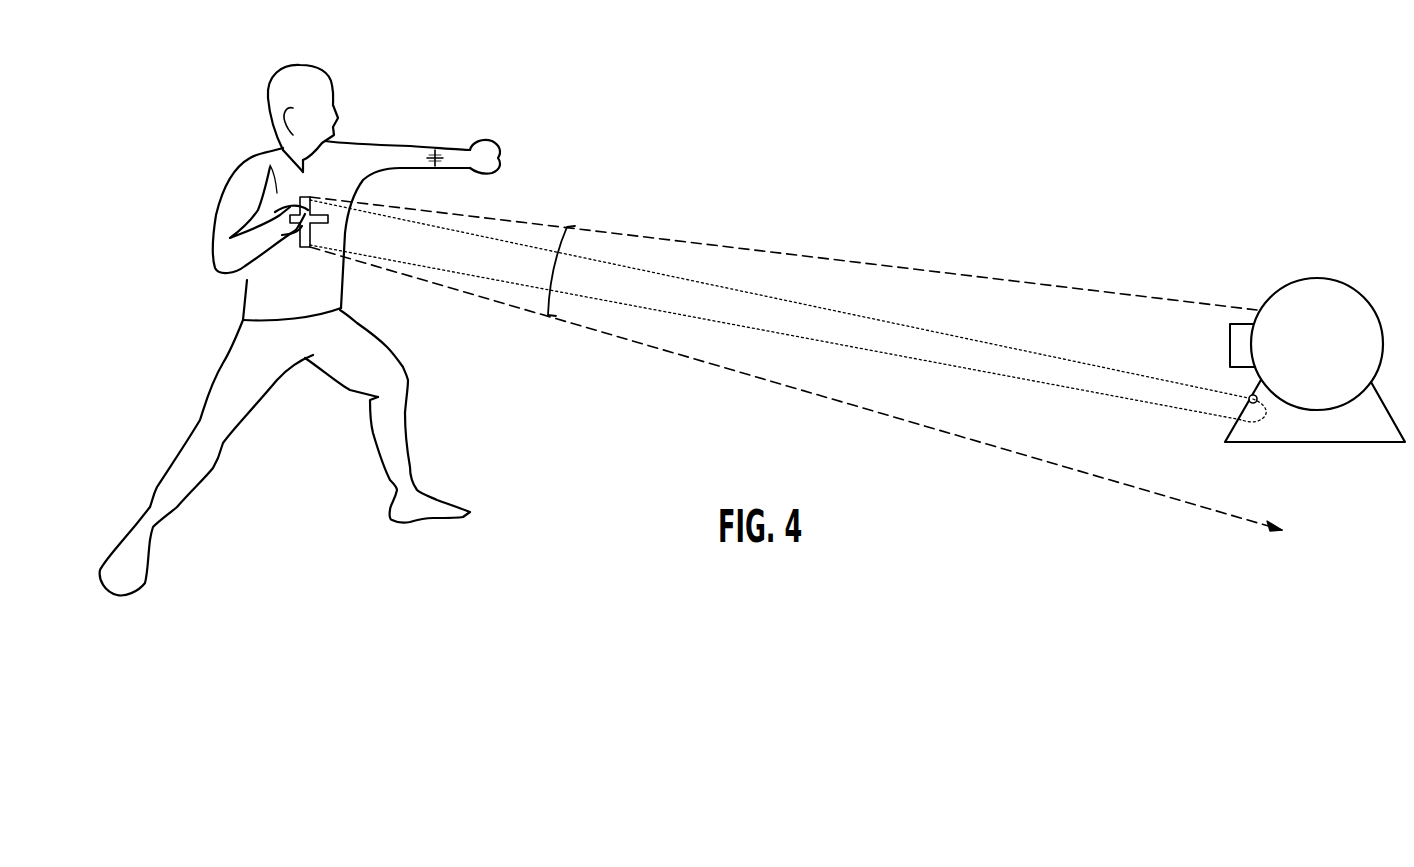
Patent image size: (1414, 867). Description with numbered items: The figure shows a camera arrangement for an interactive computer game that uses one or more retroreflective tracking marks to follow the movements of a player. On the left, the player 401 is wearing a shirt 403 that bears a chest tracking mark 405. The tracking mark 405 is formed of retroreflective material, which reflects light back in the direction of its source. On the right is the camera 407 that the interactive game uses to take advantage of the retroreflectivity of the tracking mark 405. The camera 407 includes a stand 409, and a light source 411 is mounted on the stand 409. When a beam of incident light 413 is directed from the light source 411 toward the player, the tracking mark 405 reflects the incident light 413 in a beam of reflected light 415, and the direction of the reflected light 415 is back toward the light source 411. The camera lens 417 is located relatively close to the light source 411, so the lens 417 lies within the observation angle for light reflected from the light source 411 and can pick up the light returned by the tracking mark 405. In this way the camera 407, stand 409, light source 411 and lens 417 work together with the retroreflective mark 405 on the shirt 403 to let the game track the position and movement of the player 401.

The player 401 is at (465, 425).
The shirt 403 is at (417, 148).
The chest tracking mark 405 is at (268, 153).
The camera 407 is at (1350, 288).
The stand 409 is at (1370, 487).
The light source 411 is at (1320, 540).
The incident light 413 is at (908, 340).
The reflected light 415 is at (1085, 288).
The camera lens 417 is at (1230, 345).